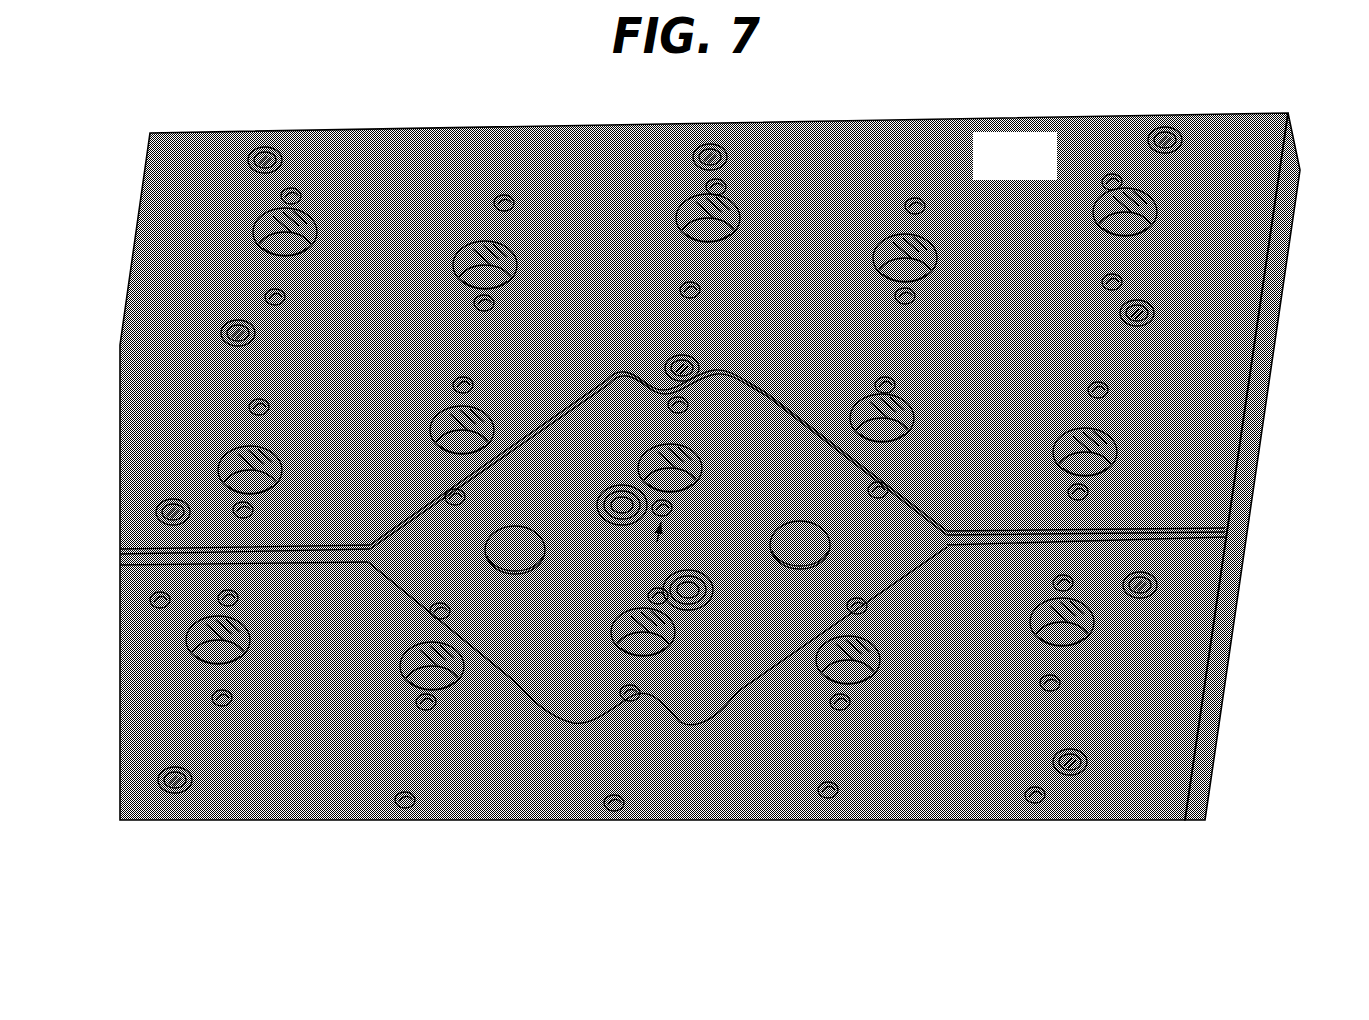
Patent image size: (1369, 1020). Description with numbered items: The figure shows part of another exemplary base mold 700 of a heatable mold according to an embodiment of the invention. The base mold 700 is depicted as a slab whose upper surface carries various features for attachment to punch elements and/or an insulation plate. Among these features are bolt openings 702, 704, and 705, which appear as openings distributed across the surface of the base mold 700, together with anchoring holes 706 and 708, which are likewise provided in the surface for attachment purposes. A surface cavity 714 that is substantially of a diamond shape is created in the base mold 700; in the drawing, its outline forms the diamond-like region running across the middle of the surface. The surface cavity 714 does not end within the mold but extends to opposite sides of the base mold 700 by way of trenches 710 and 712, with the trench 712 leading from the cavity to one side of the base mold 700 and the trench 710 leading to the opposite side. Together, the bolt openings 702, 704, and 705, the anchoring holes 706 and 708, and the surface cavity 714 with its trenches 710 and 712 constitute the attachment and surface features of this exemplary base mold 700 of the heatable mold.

The base mold 700 is at (1036, 168).
The bolt opening 702 is at (700, 618).
The bolt opening 704 is at (1033, 642).
The bolt opening 705 is at (648, 443).
The anchoring hole 706 is at (1148, 605).
The anchoring hole 708 is at (1042, 693).
The trench 710 is at (1162, 540).
The trench 712 is at (235, 555).
The surface cavity 714 is at (535, 622).